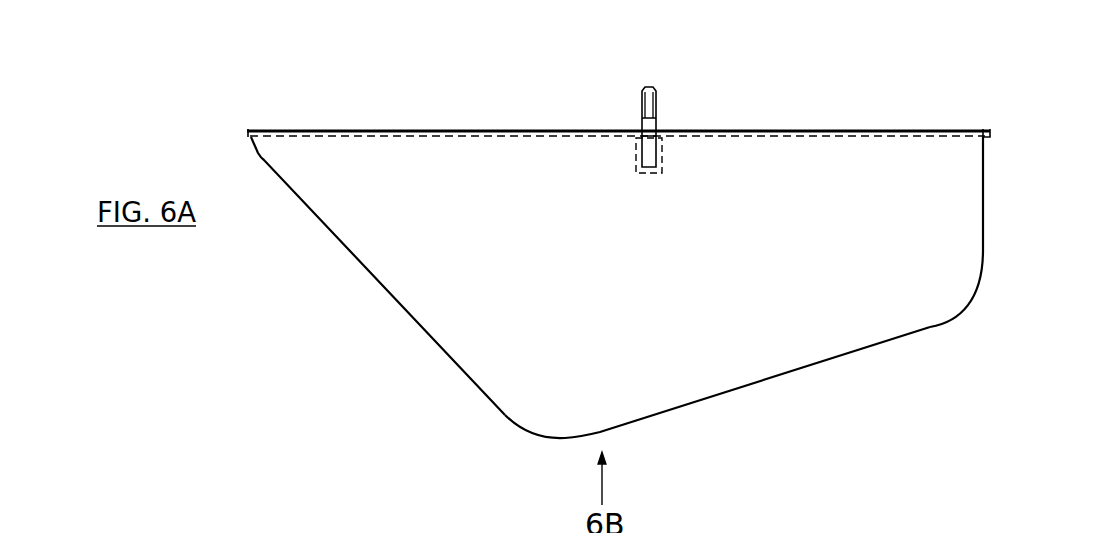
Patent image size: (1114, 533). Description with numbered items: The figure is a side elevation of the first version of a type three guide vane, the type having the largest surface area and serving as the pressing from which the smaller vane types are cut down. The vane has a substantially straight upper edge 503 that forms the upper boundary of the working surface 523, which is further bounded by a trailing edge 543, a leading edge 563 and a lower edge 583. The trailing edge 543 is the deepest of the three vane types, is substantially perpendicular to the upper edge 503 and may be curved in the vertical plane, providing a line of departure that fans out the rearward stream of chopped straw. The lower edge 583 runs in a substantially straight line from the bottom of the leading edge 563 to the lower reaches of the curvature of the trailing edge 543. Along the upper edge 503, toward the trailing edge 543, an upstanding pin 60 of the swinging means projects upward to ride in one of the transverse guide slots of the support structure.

The upper edge 503 is at (414, 129).
The upstanding pin 60 is at (657, 100).
The working surface 523 is at (667, 304).
The trailing edge 543 is at (983, 201).
The leading edge 563 is at (377, 282).
The lower edge 583 is at (722, 395).